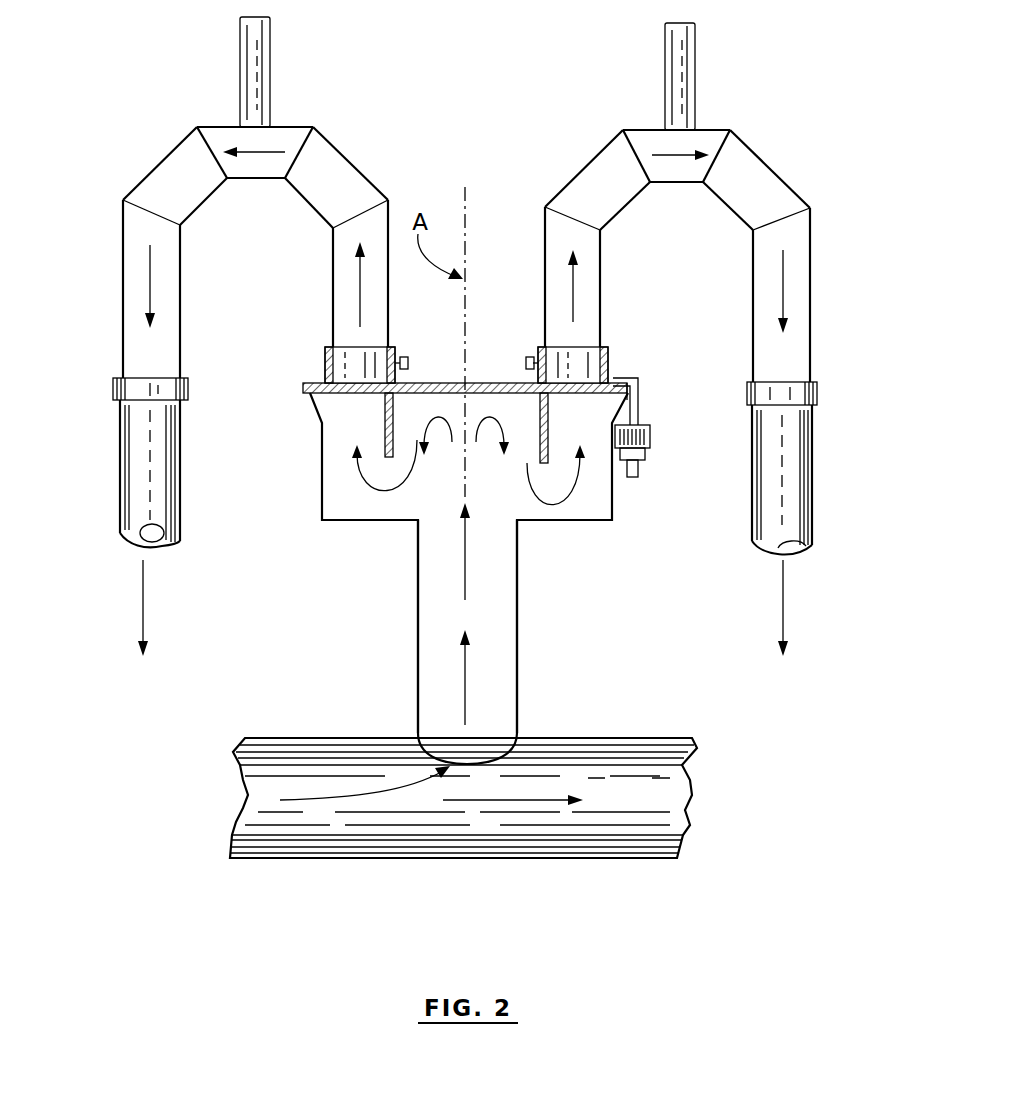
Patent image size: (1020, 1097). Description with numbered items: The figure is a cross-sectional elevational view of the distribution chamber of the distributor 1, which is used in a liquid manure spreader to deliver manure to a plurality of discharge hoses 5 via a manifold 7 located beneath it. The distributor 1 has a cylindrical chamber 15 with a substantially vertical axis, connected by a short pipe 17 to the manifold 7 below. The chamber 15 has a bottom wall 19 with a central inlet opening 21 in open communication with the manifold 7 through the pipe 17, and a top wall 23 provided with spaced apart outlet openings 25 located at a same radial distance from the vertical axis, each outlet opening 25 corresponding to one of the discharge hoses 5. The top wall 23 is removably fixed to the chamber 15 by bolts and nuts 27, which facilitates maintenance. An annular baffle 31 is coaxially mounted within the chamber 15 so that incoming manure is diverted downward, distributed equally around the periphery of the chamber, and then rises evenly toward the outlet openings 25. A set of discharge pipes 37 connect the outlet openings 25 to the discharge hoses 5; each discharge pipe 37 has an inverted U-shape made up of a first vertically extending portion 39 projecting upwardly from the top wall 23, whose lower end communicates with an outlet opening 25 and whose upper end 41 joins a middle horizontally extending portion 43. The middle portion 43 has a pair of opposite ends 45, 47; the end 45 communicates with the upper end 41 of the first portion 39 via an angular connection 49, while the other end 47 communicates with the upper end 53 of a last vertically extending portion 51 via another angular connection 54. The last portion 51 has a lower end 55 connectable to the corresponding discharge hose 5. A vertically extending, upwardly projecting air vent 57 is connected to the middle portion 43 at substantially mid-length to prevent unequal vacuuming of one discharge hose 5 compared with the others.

The distributor 1 is at (322, 531).
The discharge hose 5 is at (145, 452).
The manifold 7 is at (592, 806).
The cylindrical chamber 15 is at (622, 497).
The short pipe 17 is at (520, 687).
The bottom wall 19 is at (576, 522).
The central inlet opening 21 is at (488, 522).
The top wall 23 is at (466, 363).
The outlet opening 25 is at (358, 370).
The bolts and nuts 27 is at (652, 440).
The annular baffle 31 is at (384, 415).
The discharge pipe 37 is at (368, 149).
The first vertically extending portion 39 is at (331, 273).
The upper end of the first portion 41 is at (357, 218).
The middle horizontally extending portion 43 is at (296, 126).
The opposite end of the middle portion 45 is at (302, 147).
The other opposite end of the middle portion 47 is at (214, 141).
The angular connection 49 is at (308, 201).
The last vertically extending portion 51 is at (123, 325).
The upper end of the last portion 53 is at (148, 207).
The another angular connection 54 is at (168, 155).
The lower end of the last portion 55 is at (157, 388).
The air vent 57 is at (253, 60).